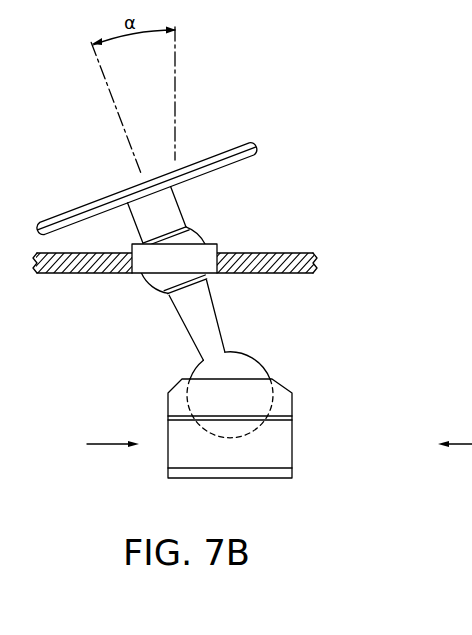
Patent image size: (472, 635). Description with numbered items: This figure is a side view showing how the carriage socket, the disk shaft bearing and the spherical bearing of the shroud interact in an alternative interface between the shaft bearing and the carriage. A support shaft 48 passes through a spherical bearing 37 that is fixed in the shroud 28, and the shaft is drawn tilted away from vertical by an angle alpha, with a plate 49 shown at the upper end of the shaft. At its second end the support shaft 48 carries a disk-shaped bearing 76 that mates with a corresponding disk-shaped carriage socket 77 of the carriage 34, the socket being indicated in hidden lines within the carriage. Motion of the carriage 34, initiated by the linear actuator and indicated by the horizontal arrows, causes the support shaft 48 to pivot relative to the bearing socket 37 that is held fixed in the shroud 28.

The shroud 28 is at (288, 252).
The carriage 34 is at (288, 445).
The spherical bearing 37 is at (208, 242).
The support shaft 48 is at (181, 326).
The plate 49 is at (88, 203).
The disk bearing 76 is at (243, 364).
The carriage socket 77 is at (184, 403).